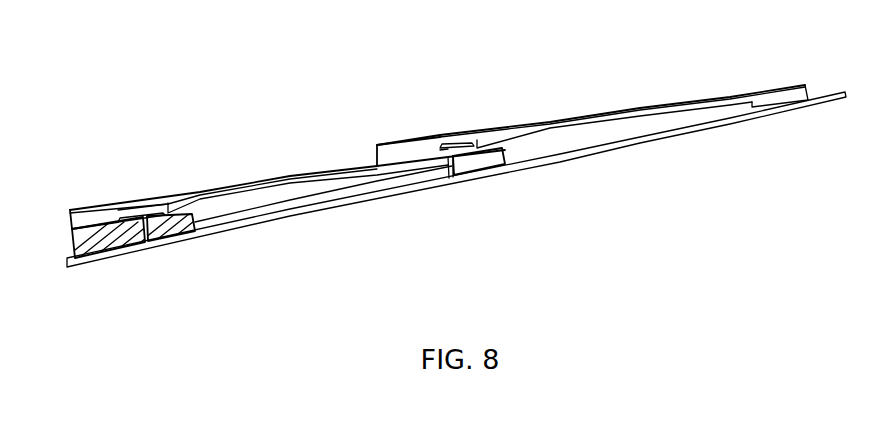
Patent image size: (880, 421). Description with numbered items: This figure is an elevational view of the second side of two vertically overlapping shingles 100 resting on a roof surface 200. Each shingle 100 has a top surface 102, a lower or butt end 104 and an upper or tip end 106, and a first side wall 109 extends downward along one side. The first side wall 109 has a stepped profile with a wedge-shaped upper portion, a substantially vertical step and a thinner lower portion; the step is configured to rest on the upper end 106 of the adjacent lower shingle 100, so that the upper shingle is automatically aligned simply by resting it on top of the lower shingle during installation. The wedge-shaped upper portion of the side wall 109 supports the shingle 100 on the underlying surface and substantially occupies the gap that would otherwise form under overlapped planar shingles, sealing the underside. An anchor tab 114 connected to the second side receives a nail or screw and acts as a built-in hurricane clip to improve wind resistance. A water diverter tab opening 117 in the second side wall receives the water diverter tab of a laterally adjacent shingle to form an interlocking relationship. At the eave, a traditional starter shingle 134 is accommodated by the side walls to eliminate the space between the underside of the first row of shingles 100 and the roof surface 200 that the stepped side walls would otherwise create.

The shingle 100 is at (320, 128).
The top surface 102 is at (302, 175).
The lower end 104 is at (68, 220).
The upper end 106 is at (506, 164).
The first side wall 109 is at (158, 202).
The anchor tab 114 is at (118, 218).
The water diverter tab opening 117 is at (284, 201).
The starter shingle 134 is at (178, 237).
The roof surface 200 is at (833, 100).